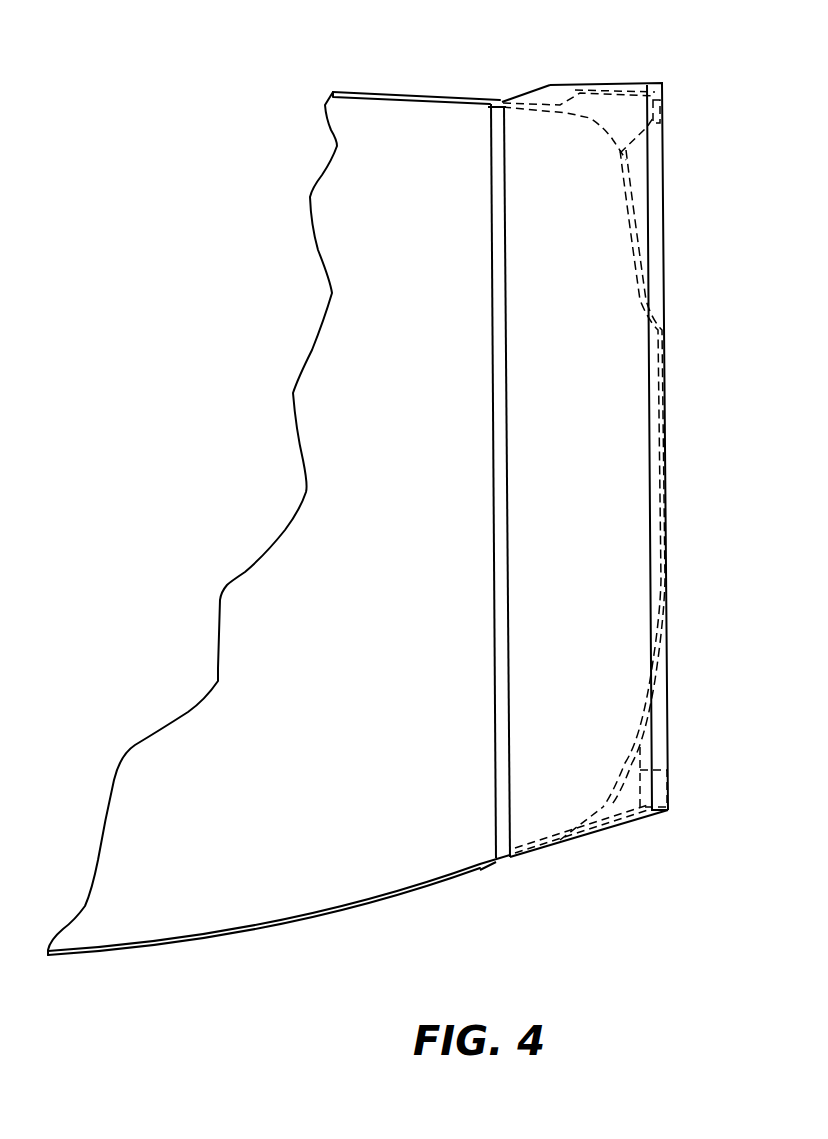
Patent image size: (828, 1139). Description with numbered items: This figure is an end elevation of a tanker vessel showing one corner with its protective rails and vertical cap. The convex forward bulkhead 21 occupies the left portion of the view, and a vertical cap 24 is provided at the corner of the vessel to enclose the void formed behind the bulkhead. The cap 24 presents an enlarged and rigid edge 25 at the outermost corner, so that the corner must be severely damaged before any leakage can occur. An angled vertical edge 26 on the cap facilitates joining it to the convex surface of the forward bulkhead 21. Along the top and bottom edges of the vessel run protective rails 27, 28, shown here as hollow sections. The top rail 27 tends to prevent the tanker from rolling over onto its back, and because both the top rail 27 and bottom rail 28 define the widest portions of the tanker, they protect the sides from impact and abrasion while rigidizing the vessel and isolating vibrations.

The forward bulkhead 21 is at (393, 128).
The vertical cap 24 is at (597, 365).
The rigid edge 25 is at (655, 173).
The angled vertical edge 26 is at (493, 158).
The top protective rail 27 is at (625, 93).
The bottom protective rail 28 is at (632, 813).